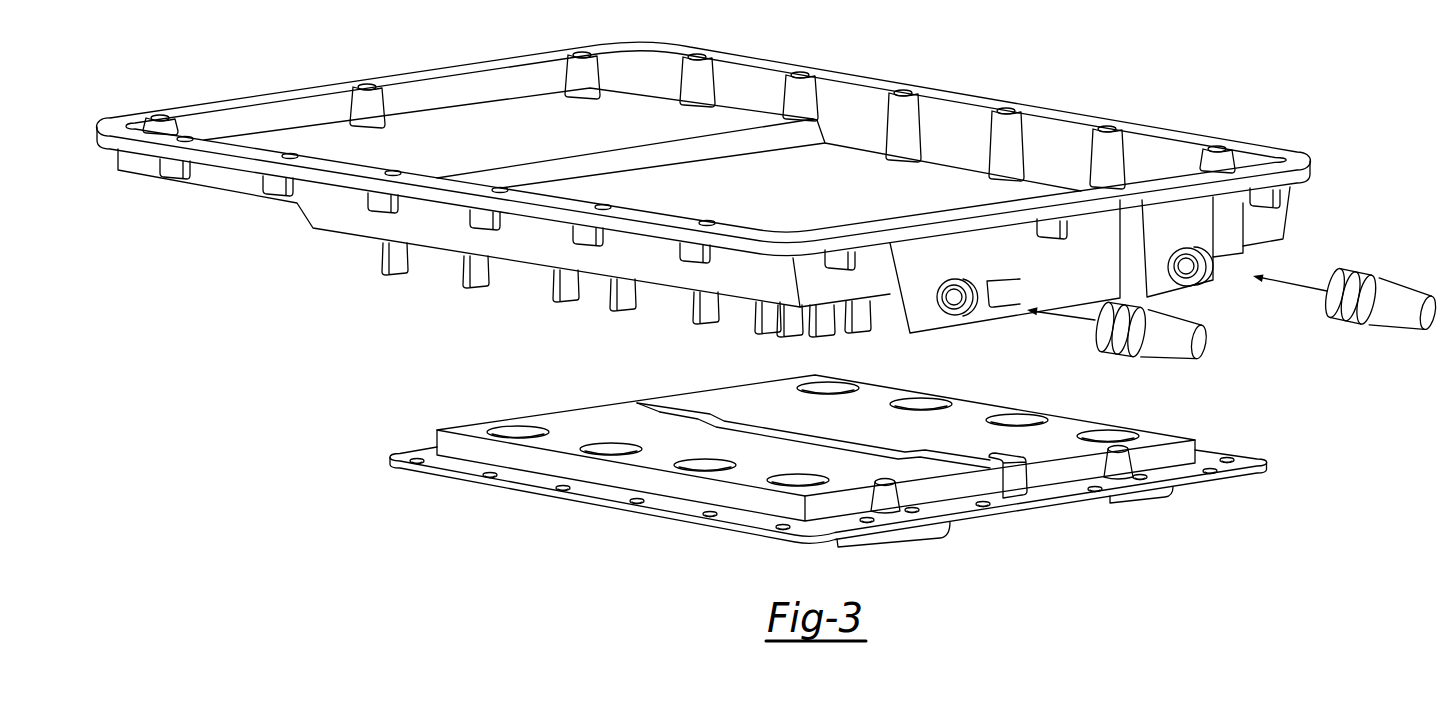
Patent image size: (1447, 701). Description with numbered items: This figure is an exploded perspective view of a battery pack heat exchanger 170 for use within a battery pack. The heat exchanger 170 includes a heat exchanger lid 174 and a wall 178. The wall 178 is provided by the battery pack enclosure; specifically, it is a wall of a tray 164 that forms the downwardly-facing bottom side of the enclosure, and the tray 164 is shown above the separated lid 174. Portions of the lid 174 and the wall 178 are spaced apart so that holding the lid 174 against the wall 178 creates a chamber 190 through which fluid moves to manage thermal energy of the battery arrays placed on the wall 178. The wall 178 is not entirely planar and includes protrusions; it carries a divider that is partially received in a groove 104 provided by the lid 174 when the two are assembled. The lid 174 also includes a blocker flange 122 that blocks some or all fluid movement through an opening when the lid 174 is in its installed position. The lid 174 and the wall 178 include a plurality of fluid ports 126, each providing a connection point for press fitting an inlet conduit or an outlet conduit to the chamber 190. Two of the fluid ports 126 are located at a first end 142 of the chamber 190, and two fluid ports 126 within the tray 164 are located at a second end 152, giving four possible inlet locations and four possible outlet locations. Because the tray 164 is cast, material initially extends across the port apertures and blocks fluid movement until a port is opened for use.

The second end 152 is at (704, 187).
The tray 164 is at (754, 60).
The wall 178 is at (937, 187).
The fluid port 126 is at (975, 306).
The first end 142 is at (1293, 360).
The chamber 190 is at (428, 336).
The heat exchanger 170 is at (788, 476).
The heat exchanger lid 174 is at (685, 523).
The groove 104 is at (816, 463).
The blocker flange 122 is at (1013, 482).